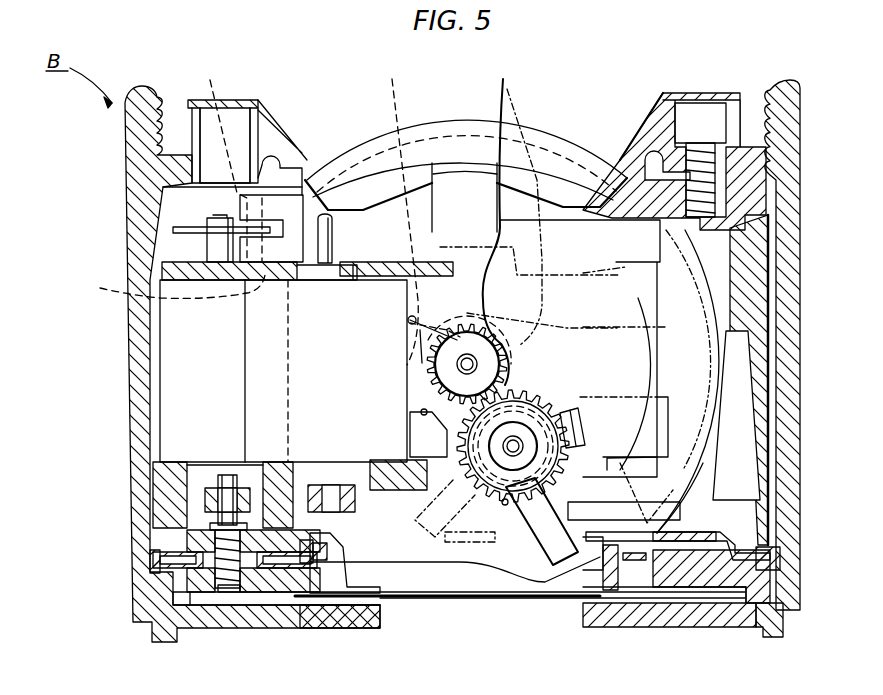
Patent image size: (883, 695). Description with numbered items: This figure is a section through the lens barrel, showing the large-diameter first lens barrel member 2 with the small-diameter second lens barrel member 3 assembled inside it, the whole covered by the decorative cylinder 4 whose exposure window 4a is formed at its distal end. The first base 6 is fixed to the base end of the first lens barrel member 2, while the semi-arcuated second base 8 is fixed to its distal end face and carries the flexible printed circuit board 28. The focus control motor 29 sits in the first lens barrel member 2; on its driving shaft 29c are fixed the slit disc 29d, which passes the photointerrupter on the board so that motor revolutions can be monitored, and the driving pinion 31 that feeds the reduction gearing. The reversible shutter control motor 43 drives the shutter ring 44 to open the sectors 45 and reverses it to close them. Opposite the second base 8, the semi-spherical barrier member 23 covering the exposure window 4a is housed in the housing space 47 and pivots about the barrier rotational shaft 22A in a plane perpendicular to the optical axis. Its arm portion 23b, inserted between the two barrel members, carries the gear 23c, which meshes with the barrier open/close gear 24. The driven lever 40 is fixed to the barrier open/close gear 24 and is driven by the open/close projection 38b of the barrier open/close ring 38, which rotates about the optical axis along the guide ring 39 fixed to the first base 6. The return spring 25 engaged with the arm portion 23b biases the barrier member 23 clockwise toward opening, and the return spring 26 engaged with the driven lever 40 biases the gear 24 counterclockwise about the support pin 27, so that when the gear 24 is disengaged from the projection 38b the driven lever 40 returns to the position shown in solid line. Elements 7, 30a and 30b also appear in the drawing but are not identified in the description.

The first lens barrel member 2 is at (170, 480).
The second lens barrel member 3 is at (377, 232).
The decorative cylinder 4 is at (788, 207).
The exposure window 4a is at (305, 158).
The first base 6 is at (710, 573).
The screw 7 is at (232, 570).
The second base 8 is at (167, 270).
The barrier rotational shaft 22A is at (477, 363).
The barrier member 23 is at (548, 140).
The arm portion 23b is at (512, 218).
The gear 23c is at (420, 385).
The barrier open/close gear 24 is at (507, 397).
The return spring 25 is at (446, 208).
The return spring 26 is at (500, 480).
The support pin 27 is at (527, 445).
The flexible printed circuit board 28 is at (303, 195).
The focus control motor 29 is at (180, 333).
The driving shaft 29c is at (217, 213).
The slit disc 29d is at (215, 232).
The bore 30a is at (230, 156).
The passage 30b is at (161, 288).
The driving pinion 31 is at (250, 512).
The barrier open/close ring 38 is at (173, 560).
The open/close projection 38b is at (187, 562).
The guide ring 39 is at (157, 578).
The driven lever 40 is at (548, 537).
The shutter control motor 43 is at (300, 357).
The shutter ring 44 is at (318, 520).
The sectors 45 is at (438, 598).
The housing space 47 is at (710, 255).